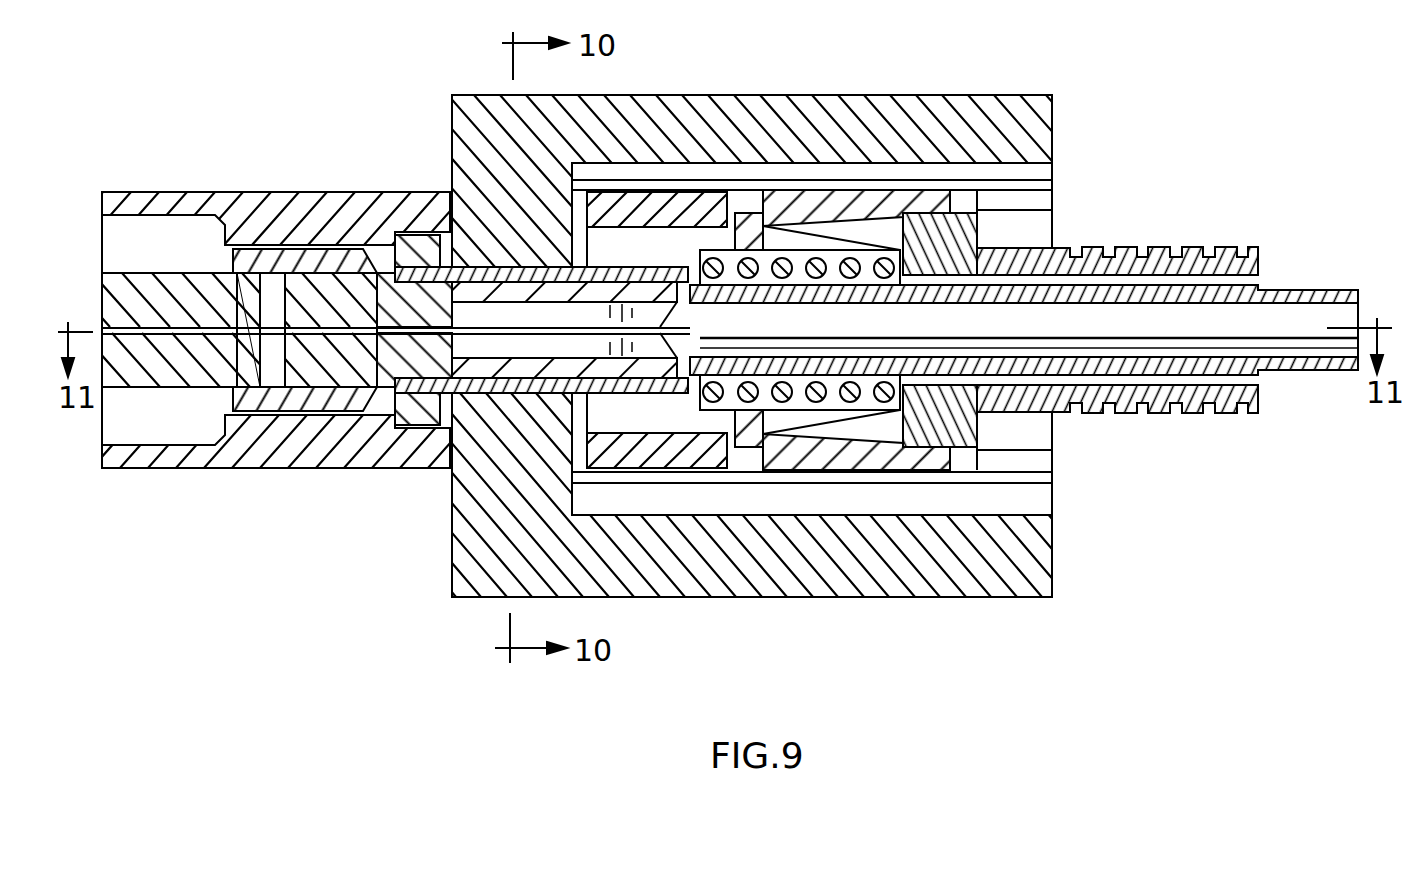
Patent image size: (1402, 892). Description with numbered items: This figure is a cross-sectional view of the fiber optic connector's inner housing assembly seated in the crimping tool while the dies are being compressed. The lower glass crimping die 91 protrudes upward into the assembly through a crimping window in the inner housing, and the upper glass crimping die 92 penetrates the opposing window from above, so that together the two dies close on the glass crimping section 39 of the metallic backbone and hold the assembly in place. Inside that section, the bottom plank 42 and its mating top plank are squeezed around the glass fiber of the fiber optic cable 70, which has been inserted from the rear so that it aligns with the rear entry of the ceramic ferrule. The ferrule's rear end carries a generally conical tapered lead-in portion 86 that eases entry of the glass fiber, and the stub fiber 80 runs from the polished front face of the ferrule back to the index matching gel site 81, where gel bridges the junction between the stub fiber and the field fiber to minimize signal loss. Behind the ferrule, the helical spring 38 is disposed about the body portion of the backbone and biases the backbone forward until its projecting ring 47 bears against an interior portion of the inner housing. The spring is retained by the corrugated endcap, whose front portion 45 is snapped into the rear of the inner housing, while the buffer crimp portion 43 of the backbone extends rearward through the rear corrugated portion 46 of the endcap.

The upper glass crimping die 92 is at (452, 118).
The lower glass crimping die 91 is at (448, 560).
The stub fiber 80 is at (173, 335).
The index matching gel site 81 is at (270, 280).
The bottom plank 42 is at (375, 268).
The fiber optic cable 70 is at (307, 337).
The tapered lead-in portion 86 is at (352, 350).
The projecting ring 47 is at (418, 428).
The glass crimping section 39 is at (530, 395).
The helical spring 38 is at (708, 410).
The front portion of endcap 45 is at (1020, 412).
The rear corrugated portion of endcap 46 is at (1173, 412).
The buffer crimp portion 43 is at (1310, 370).